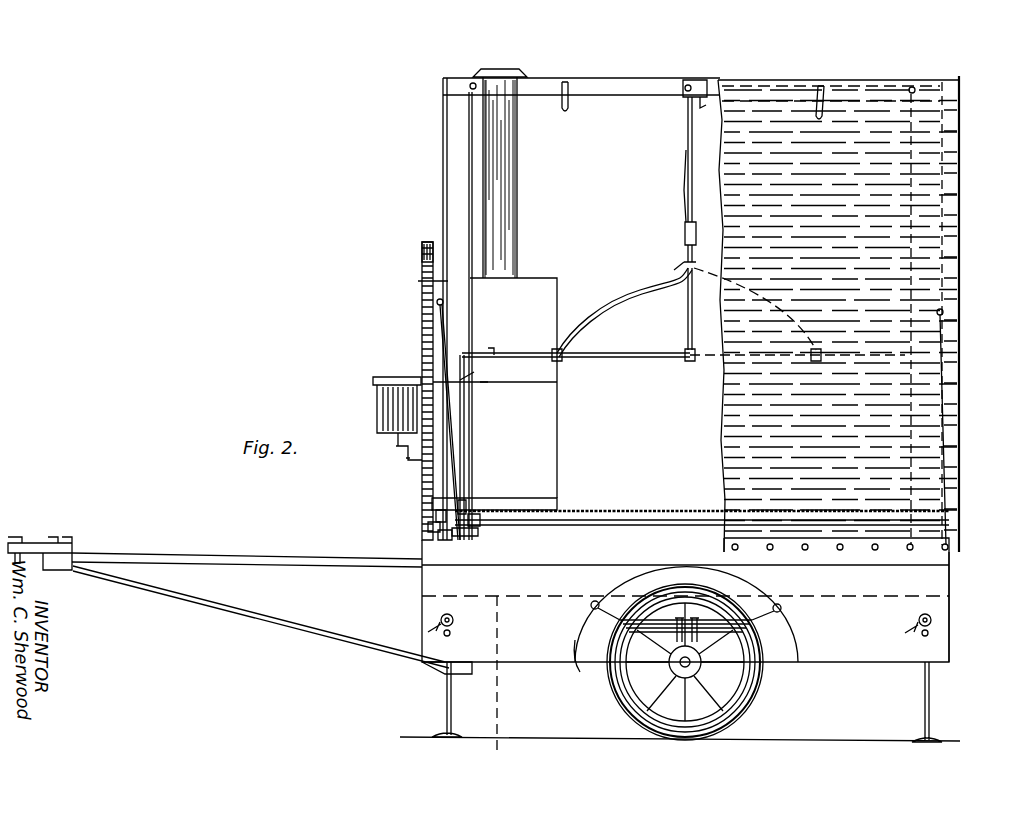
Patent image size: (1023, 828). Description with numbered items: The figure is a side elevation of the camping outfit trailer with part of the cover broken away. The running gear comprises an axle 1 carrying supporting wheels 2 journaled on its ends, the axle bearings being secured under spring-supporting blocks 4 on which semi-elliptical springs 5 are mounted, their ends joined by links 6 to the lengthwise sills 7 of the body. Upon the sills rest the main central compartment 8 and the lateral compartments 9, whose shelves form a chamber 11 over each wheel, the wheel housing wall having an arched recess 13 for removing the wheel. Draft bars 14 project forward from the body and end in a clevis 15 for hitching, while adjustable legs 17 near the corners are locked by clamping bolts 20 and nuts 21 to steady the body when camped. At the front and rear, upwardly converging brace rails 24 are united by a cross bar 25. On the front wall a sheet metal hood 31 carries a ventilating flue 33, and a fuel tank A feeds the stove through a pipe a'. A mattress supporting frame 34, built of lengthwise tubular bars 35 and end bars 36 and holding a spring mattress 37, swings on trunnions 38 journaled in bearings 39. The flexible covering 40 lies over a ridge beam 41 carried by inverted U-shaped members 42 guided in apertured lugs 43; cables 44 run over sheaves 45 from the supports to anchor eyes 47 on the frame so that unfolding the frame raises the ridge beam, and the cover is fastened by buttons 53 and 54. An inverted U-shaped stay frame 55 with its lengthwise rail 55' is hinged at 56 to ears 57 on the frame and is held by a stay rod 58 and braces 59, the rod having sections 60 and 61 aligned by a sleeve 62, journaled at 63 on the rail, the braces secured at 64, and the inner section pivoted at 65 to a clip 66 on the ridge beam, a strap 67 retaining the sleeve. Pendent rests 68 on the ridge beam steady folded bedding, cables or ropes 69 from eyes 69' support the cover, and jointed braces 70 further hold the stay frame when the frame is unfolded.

The axle 1 is at (678, 667).
The supporting wheels 2 is at (752, 690).
The spring-supporting blocks 4 is at (706, 630).
The semi-elliptical springs 5 is at (664, 628).
The links 6 is at (600, 602).
The lengthwise sills 7 is at (712, 579).
The main central compartment 8 is at (780, 662).
The lateral compartments 9 is at (447, 603).
The chamber 11 is at (498, 55).
The arched recesses 13 is at (579, 668).
The draft bars 14 is at (292, 612).
The clevis 15 is at (34, 543).
The adjustable legs 17 is at (446, 708).
The clamping bolts 20 is at (453, 620).
The nuts 21 is at (425, 620).
The brace rails 24 is at (424, 316).
The cross bar 25 is at (425, 244).
The sheet metal hood 31 is at (557, 300).
The ventilating flue 33 is at (518, 209).
The mattress supporting frames 34 is at (478, 536).
The lengthwise tubular bars 35 is at (600, 530).
The end bars 36 is at (478, 514).
The spring mattress 37 is at (680, 510).
The trunnions 38 is at (448, 540).
The bearings 39 is at (428, 528).
The flexible covering 40 is at (838, 290).
The ridge beam 41 is at (650, 78).
The inverted U-shaped members 42 is at (443, 155).
The apertured lugs 43 is at (418, 280).
The cables 44 is at (452, 425).
The sheaves 45 is at (442, 305).
The anchor eyes 47 is at (505, 510).
The buttons 53 is at (875, 551).
The buttons 54 is at (728, 292).
The stay frames 55 is at (575, 431).
The lengthwise rail 55' is at (766, 372).
The hinge 56 is at (464, 500).
The ears 57 is at (436, 504).
The stay rod 58 is at (684, 250).
The braces 59 is at (624, 310).
The section 60 is at (688, 330).
The section 61 is at (688, 154).
The sleeve 62 is at (697, 234).
The journal 63 is at (560, 361).
The connection 64 is at (680, 264).
The pivot 65 is at (705, 100).
The clip 66 is at (684, 97).
The strap 67 is at (684, 210).
The rests 68 is at (565, 86).
The cables or ropes 69 is at (701, 313).
The eyes 69' is at (462, 69).
The jointed braces 70 is at (913, 86).
The tank A is at (377, 410).
The pipe a' is at (395, 451).